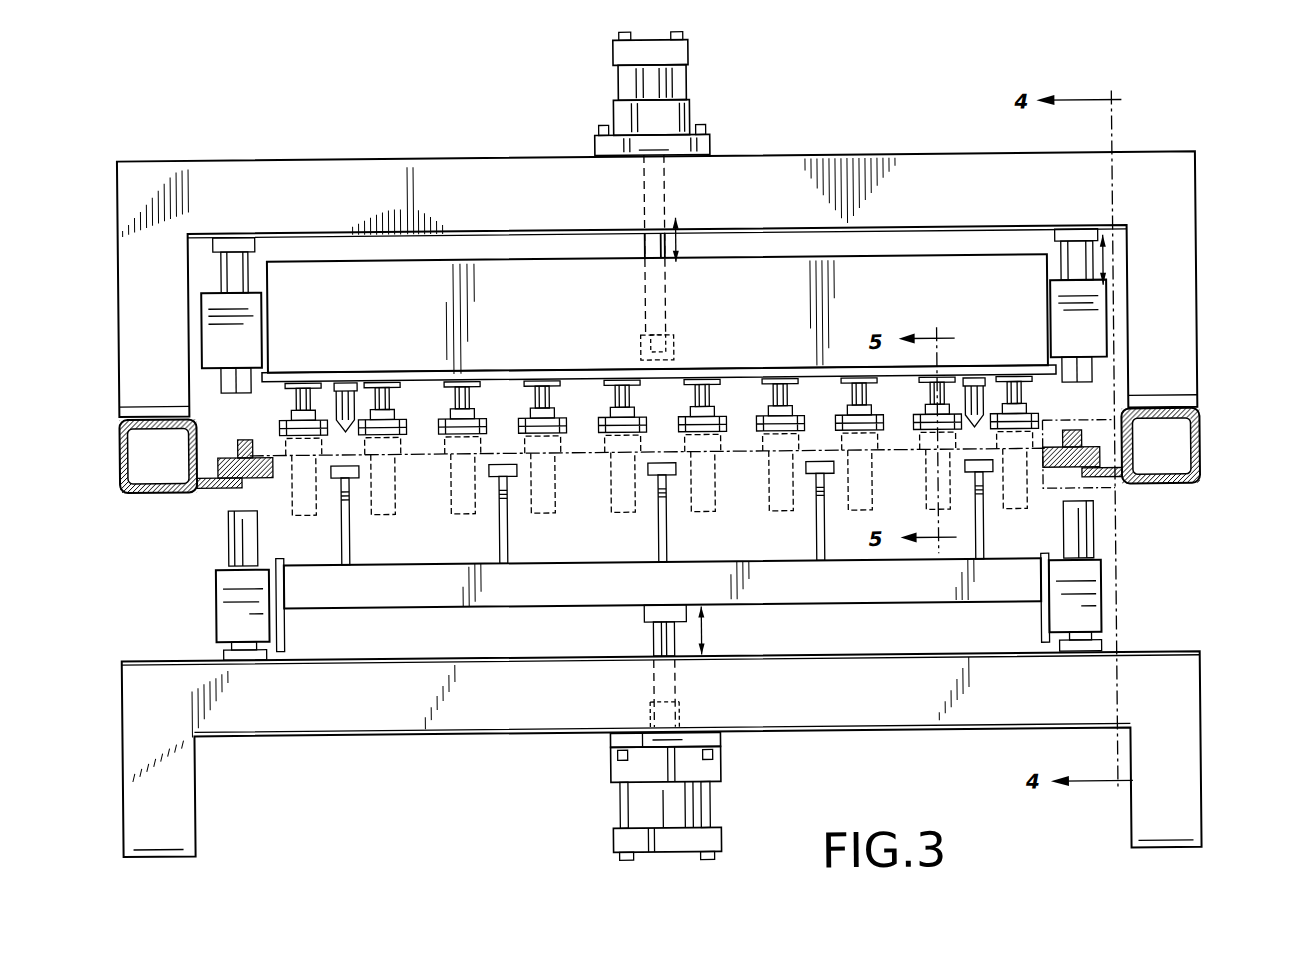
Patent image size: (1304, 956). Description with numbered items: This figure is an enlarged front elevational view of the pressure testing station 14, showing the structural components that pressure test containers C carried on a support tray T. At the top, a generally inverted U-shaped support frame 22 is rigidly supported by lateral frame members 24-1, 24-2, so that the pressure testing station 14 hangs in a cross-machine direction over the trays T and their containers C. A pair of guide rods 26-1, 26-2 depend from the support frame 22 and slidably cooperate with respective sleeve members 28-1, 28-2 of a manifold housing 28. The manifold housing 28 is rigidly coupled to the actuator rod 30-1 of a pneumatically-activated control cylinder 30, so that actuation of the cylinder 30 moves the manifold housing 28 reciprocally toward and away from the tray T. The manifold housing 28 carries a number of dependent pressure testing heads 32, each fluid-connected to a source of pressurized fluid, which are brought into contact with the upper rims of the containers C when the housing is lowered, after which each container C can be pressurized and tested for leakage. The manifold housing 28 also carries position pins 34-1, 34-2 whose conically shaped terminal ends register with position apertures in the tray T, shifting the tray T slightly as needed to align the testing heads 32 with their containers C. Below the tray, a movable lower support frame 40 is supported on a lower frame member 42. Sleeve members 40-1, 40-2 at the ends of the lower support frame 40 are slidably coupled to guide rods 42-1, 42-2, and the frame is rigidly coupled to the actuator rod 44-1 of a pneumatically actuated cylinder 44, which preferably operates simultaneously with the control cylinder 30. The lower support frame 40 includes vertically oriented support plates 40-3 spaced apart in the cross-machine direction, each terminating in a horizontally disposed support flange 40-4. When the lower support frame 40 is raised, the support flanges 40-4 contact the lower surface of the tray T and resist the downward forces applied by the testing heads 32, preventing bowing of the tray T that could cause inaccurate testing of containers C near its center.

The pressure testing station 14 is at (881, 136).
The support frame 22 is at (603, 190).
The lateral frame member 24-1 is at (120, 488).
The lateral frame member 24-2 is at (1200, 440).
The guide rod 26-1 is at (245, 258).
The guide rod 26-2 is at (1073, 257).
The manifold housing 28 is at (714, 289).
The sleeve member 28-1 is at (237, 337).
The sleeve member 28-2 is at (1085, 333).
The control cylinder 30 is at (686, 77).
The actuator rod 30-1 is at (650, 250).
The pressure testing heads 32 is at (309, 368).
The position pin 34-1 is at (352, 388).
The position pin 34-2 is at (983, 395).
The lower support frame 40 is at (852, 595).
The sleeve member 40-1 is at (238, 622).
The sleeve member 40-2 is at (1090, 582).
The support plates 40-3 is at (349, 541).
The support flange 40-4 is at (331, 470).
The lower frame member 42 is at (310, 696).
The guide rod 42-1 is at (228, 528).
The guide rod 42-2 is at (1085, 512).
The cylinder 44 is at (656, 818).
The actuator rod 44-1 is at (658, 634).
The support tray T is at (413, 460).
The containers C is at (375, 504).